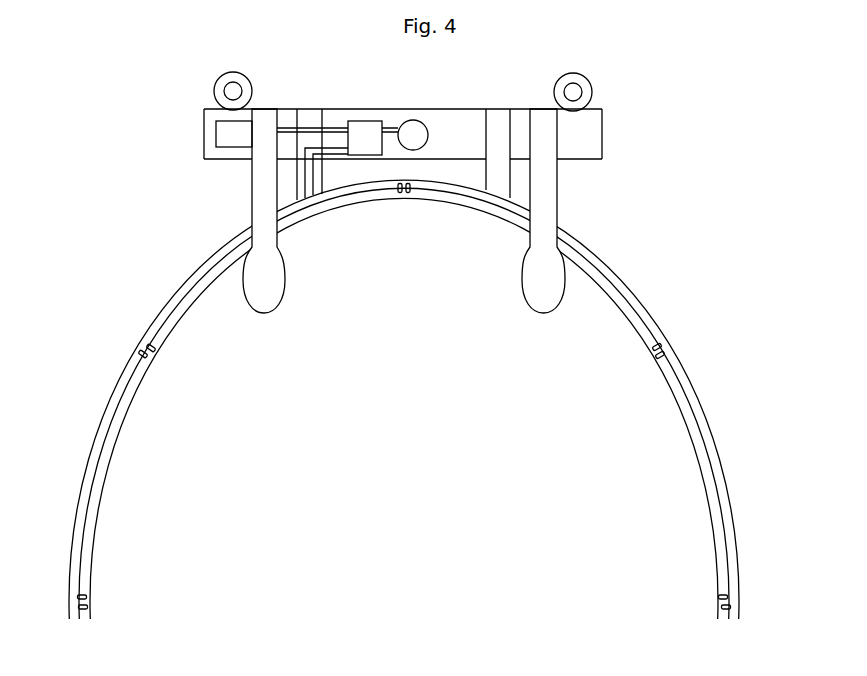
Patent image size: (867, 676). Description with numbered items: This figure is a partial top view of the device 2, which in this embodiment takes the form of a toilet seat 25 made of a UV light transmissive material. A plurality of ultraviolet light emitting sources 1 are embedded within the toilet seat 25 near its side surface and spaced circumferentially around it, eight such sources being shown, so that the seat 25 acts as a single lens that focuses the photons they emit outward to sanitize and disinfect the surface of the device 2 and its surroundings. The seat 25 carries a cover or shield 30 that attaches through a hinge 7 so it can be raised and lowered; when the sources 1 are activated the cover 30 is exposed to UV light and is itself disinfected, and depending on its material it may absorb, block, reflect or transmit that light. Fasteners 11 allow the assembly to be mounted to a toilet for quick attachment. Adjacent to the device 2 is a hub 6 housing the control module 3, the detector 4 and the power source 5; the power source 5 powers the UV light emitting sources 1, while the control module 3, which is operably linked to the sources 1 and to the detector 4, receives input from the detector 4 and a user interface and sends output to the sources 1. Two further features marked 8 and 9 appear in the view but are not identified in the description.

The ultraviolet light emitting source 1 is at (725, 593).
The device 2 is at (150, 243).
The control module 3 is at (357, 122).
The detector 4 is at (413, 121).
The power source 5 is at (235, 134).
The hub 6 is at (575, 144).
The hinge 7 is at (267, 194).
The inner shell 8 is at (657, 475).
The fastening strap 9 is at (487, 104).
The fasteners 11 is at (577, 90).
The toilet seat 25 is at (608, 263).
The cover or shield 30 is at (414, 525).